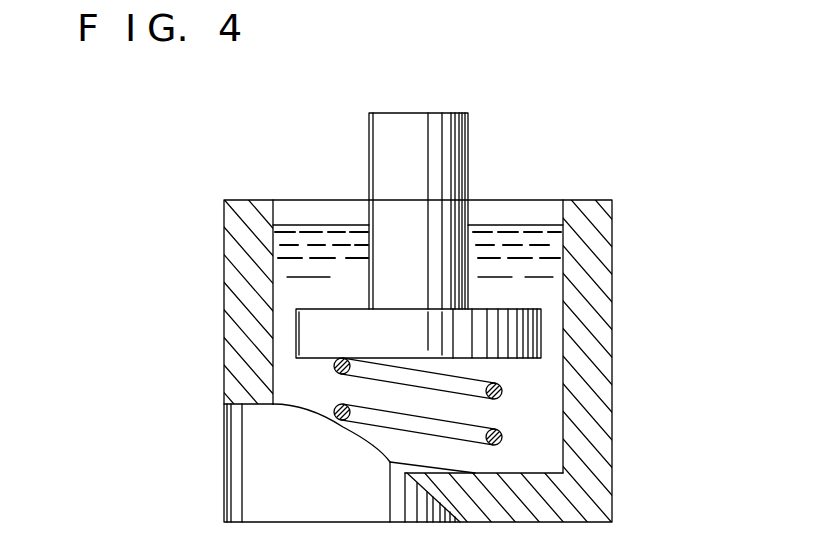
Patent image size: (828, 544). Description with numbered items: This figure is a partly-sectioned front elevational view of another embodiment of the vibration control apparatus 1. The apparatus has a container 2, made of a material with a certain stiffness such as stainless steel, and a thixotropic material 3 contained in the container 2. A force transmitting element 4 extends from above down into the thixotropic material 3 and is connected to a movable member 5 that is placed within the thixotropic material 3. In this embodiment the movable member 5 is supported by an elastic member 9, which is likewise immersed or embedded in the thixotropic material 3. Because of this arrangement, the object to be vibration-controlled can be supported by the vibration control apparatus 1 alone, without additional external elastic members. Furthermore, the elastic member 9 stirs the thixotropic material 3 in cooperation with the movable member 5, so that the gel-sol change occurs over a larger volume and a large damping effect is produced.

The vibration control apparatus 1 is at (477, 311).
The container 2 is at (612, 281).
The thixotropic material 3 is at (540, 227).
The force transmitting element 4 is at (468, 143).
The movable member 5 is at (533, 359).
The elastic member 9 is at (502, 440).